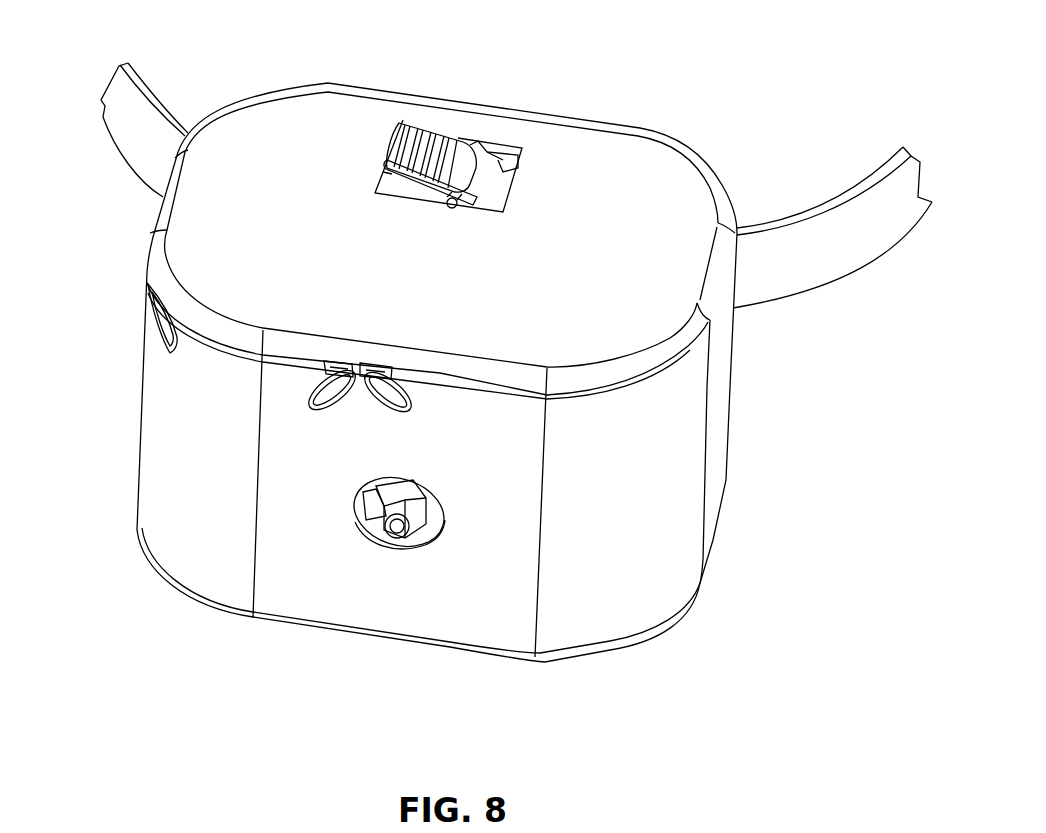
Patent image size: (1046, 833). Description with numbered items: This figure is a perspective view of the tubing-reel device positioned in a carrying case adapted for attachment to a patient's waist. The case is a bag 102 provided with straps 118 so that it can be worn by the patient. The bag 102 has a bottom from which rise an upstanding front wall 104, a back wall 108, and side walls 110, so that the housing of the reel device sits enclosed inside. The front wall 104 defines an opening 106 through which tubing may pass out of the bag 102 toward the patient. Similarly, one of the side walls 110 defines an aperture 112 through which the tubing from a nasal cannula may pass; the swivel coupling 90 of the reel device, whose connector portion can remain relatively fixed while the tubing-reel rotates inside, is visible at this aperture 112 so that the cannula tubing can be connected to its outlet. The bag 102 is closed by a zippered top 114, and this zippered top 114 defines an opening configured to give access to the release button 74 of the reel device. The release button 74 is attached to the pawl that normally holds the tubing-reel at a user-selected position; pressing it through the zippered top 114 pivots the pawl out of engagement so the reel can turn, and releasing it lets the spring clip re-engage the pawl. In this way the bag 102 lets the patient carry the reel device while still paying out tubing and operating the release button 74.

The bag 102 is at (702, 121).
The front wall 104 is at (140, 447).
The opening 106 is at (150, 331).
The back wall 108 is at (727, 413).
The side wall 110 is at (292, 618).
The aperture 112 is at (442, 510).
The swivel coupling 90 is at (358, 526).
The zippered top 114 is at (316, 90).
The release button 74 is at (404, 122).
The straps 118 is at (120, 155).